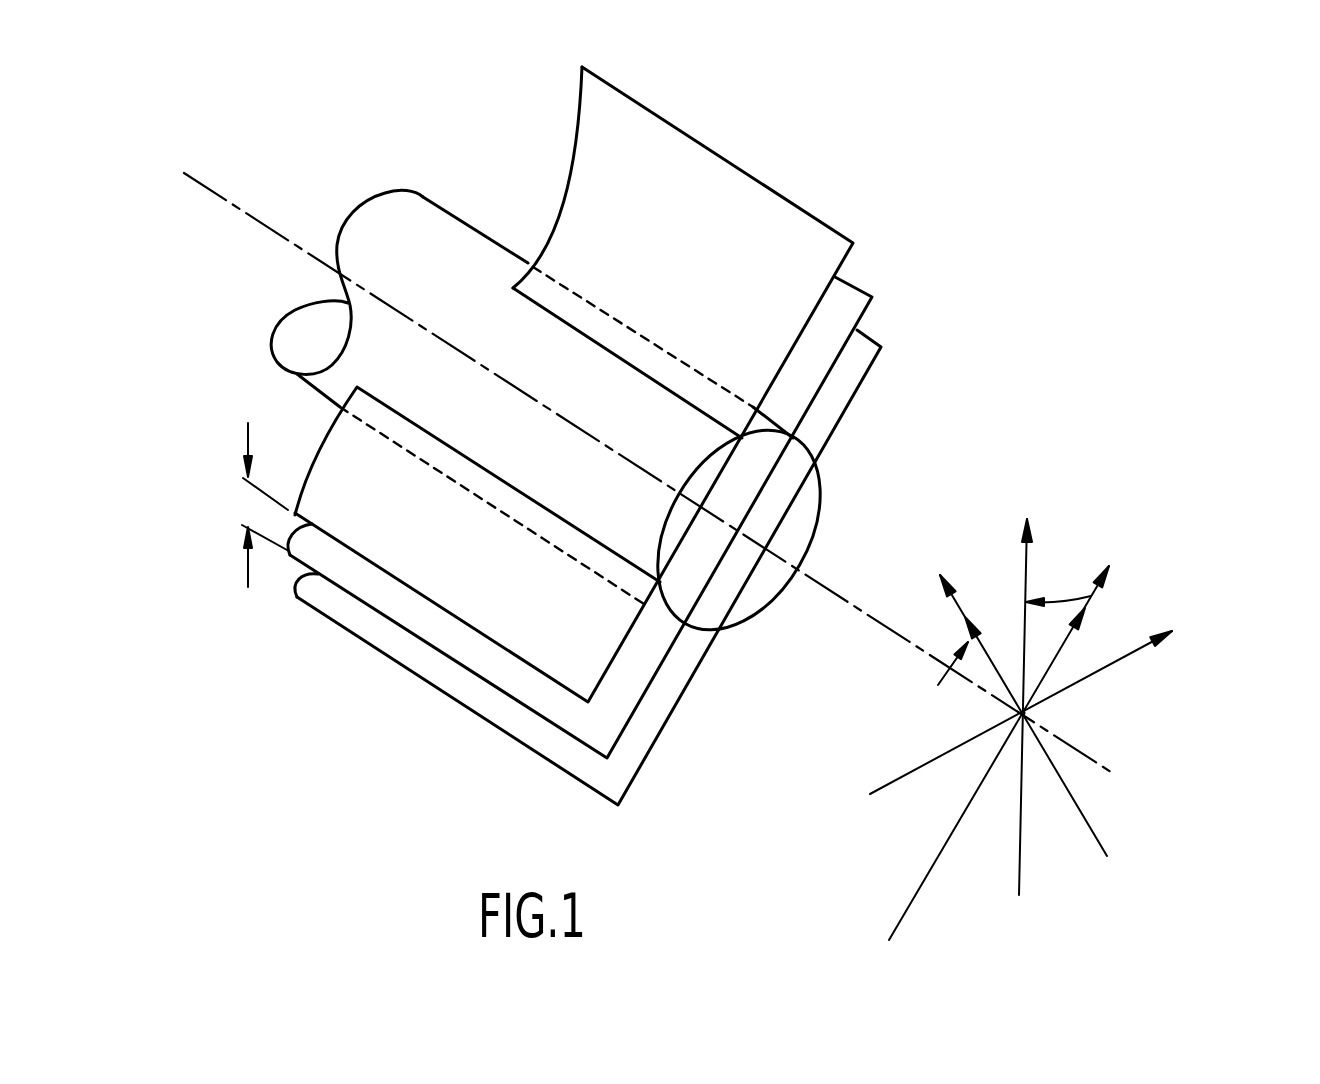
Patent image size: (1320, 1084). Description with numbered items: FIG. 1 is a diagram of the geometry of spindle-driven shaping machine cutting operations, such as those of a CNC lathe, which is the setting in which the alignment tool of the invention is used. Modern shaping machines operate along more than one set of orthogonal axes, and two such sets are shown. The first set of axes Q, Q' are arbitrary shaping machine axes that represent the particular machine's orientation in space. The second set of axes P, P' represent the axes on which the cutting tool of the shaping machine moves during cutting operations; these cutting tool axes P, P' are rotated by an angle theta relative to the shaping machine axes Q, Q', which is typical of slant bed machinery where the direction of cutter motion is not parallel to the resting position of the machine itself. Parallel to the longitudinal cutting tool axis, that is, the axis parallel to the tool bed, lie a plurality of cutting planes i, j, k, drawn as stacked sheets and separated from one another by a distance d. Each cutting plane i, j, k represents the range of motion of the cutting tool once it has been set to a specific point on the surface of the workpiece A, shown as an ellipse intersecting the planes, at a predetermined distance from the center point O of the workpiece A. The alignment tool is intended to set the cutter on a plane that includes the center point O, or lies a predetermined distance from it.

The cutting plane i is at (833, 222).
The cutting plane j is at (863, 290).
The cutting plane k is at (884, 345).
The distance d is at (258, 505).
The workpiece A is at (815, 522).
The center point O is at (1029, 714).
The cutting tool axis P is at (982, 715).
The shaping machine axis Q is at (1065, 689).
The cutting tool axis P' is at (1035, 752).
The shaping machine axis Q' is at (1056, 712).